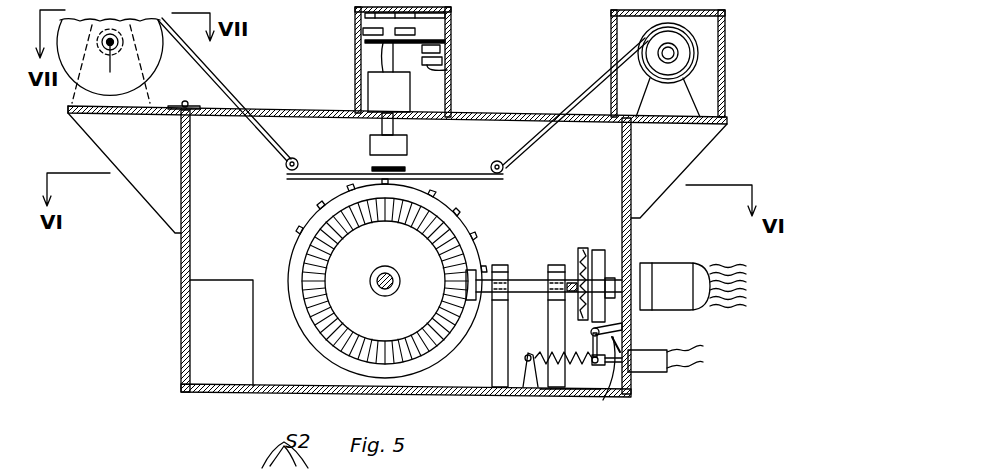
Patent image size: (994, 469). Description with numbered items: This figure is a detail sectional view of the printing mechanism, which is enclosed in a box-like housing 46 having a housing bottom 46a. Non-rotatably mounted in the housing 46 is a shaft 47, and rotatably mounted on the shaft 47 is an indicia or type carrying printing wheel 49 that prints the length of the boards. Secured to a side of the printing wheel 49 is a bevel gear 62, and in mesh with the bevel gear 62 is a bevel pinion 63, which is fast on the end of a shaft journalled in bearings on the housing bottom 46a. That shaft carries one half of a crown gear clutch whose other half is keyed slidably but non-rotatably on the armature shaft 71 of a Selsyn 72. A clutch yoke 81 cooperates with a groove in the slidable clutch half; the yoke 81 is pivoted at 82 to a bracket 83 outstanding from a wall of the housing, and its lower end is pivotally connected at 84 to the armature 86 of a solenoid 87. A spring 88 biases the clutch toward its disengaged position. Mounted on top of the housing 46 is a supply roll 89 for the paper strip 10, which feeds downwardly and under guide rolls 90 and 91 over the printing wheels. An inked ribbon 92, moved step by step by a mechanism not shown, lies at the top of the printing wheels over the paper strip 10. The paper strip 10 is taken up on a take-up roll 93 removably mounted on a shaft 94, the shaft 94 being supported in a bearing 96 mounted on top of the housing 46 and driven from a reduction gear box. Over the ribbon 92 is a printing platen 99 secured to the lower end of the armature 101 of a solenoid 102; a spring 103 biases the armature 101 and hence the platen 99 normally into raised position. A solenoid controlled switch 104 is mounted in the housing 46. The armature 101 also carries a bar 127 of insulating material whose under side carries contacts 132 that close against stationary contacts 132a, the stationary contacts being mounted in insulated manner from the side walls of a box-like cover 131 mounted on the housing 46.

The paper strip 10 is at (225, 100).
The housing 46 is at (168, 300).
The housing bottom 46a is at (558, 389).
The shaft 47 is at (390, 277).
The printing wheel 49 is at (318, 239).
The bevel gear 62 is at (312, 263).
The bevel pinion 63 is at (470, 278).
The armature shaft 71 is at (615, 287).
The Selsyn 72 is at (695, 262).
The clutch yoke 81 is at (605, 275).
The yoke pivot 82 is at (605, 333).
The bracket 83 is at (628, 378).
The pivotal connection 84 is at (604, 386).
The armature 86 is at (620, 388).
The solenoid 87 is at (668, 373).
The spring 88 is at (548, 352).
The supply roll 89 is at (690, 58).
The guide roll 90 is at (505, 171).
The guide roll 91 is at (290, 181).
The inked ribbon 92 is at (401, 147).
The take-up roll 93 is at (155, 61).
The shaft 94 is at (110, 63).
The bearing 96 is at (75, 96).
The printing platen 99 is at (442, 113).
The armature 101 is at (400, 57).
The solenoid 102 is at (368, 88).
The spring 103 is at (440, 14).
The solenoid controlled switch 104 is at (197, 355).
The bar 127 is at (390, 92).
The cover 131 is at (357, 52).
The contacts 132 is at (440, 47).
The stationary contacts 132a is at (445, 68).